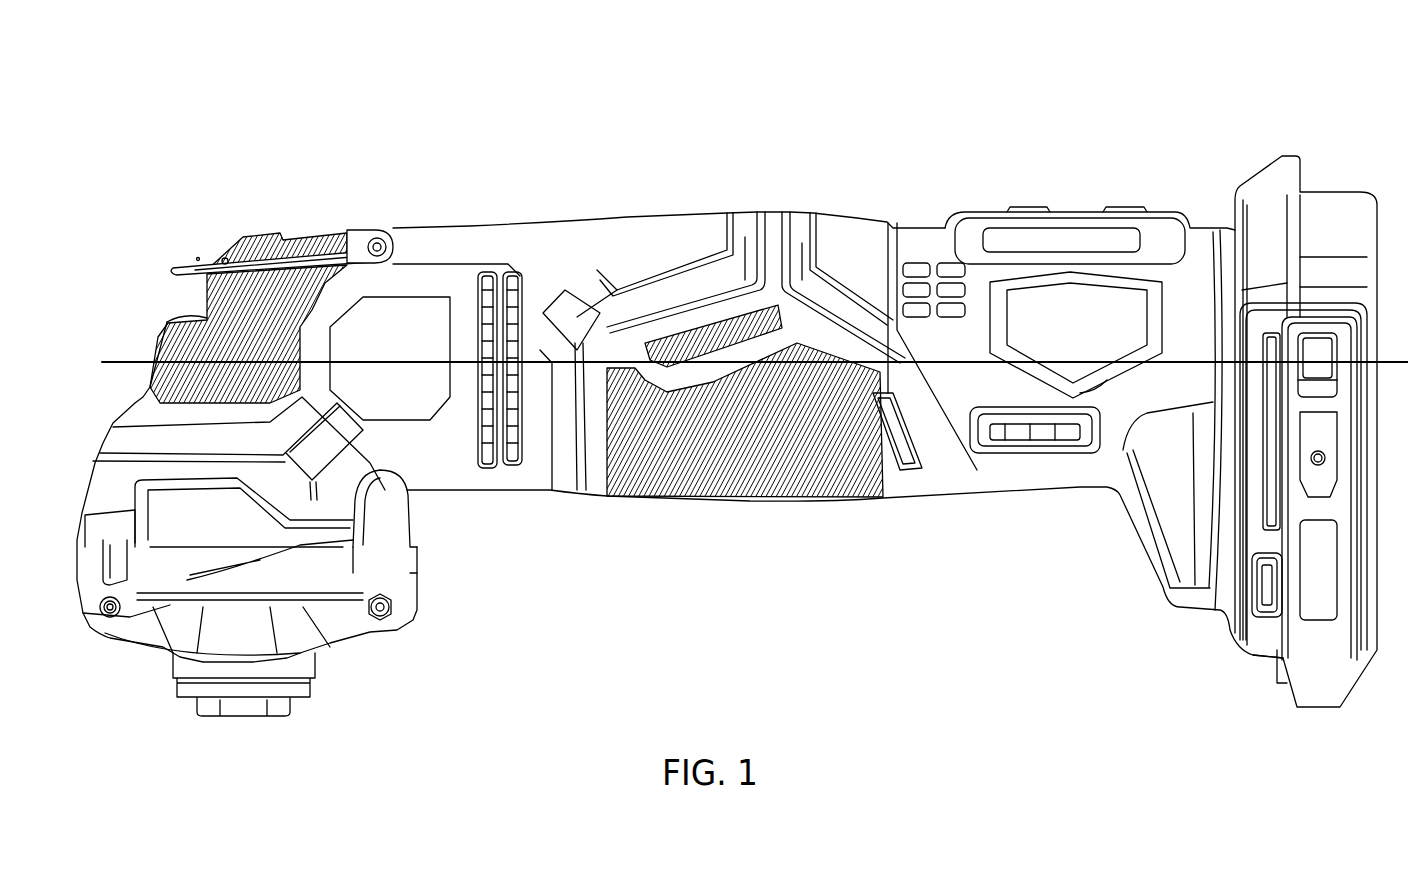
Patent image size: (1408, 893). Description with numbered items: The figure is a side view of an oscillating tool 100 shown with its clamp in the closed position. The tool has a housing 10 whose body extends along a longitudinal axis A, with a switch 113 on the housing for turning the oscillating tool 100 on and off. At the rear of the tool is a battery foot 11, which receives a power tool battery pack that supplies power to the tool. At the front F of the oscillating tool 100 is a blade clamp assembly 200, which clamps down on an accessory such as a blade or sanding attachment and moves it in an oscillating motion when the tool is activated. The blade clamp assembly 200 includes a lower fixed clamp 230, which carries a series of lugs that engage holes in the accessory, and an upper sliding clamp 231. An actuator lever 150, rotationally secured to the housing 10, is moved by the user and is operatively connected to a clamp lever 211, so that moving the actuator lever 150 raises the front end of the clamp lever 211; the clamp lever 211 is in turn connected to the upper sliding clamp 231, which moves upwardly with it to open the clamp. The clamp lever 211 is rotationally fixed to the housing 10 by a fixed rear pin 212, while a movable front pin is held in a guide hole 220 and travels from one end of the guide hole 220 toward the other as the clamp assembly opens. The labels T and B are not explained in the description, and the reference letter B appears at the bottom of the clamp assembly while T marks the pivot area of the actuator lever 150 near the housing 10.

The oscillating tool 100 is at (838, 104).
The housing 10 is at (634, 501).
The battery foot 11 is at (1340, 192).
The switch 113 is at (1153, 213).
The actuator lever 150 is at (243, 236).
The blade clamp assembly 200 is at (330, 700).
The clamp lever 211 is at (352, 633).
The fixed rear pin 212 is at (391, 607).
The guide hole 220 is at (107, 570).
The lower fixed clamp 230 is at (208, 705).
The upper sliding clamp 231 is at (183, 662).
The longitudinal axis A is at (957, 215).
The tool pivot T is at (402, 230).
The front F is at (130, 362).
The bottom axis B is at (243, 718).